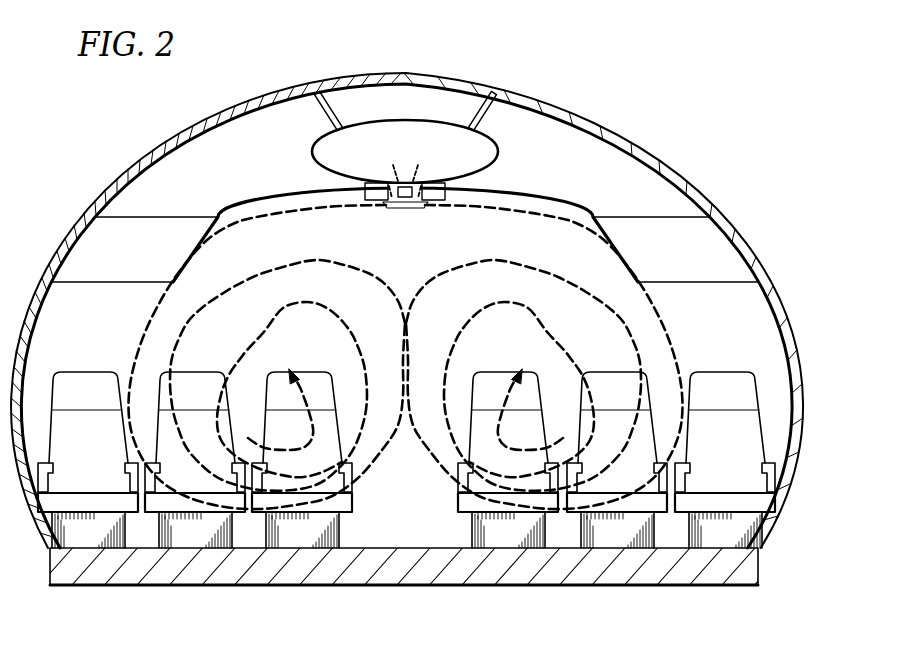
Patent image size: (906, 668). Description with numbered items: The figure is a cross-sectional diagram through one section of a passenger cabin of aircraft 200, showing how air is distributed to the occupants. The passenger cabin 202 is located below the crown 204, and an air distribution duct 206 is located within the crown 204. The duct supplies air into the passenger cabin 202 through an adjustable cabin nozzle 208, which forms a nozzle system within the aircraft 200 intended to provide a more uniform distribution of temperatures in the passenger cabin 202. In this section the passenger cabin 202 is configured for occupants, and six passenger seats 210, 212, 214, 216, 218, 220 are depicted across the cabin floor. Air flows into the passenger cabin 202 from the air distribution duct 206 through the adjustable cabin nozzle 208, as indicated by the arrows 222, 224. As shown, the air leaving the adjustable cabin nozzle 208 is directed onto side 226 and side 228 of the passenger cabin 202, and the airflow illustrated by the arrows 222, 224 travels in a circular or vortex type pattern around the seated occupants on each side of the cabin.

The aircraft 200 is at (283, 90).
The passenger cabin 202 is at (387, 529).
The crown 204 is at (549, 112).
The air distribution duct 206 is at (311, 151).
The adjustable cabin nozzle 208 is at (408, 211).
The passenger seat 210 is at (90, 368).
The passenger seat 212 is at (210, 368).
The passenger seat 214 is at (312, 368).
The passenger seat 216 is at (500, 368).
The passenger seat 218 is at (603, 368).
The passenger seat 220 is at (723, 368).
The arrow 222 is at (322, 259).
The arrow 224 is at (462, 261).
The side 226 is at (233, 221).
The side 228 is at (578, 221).